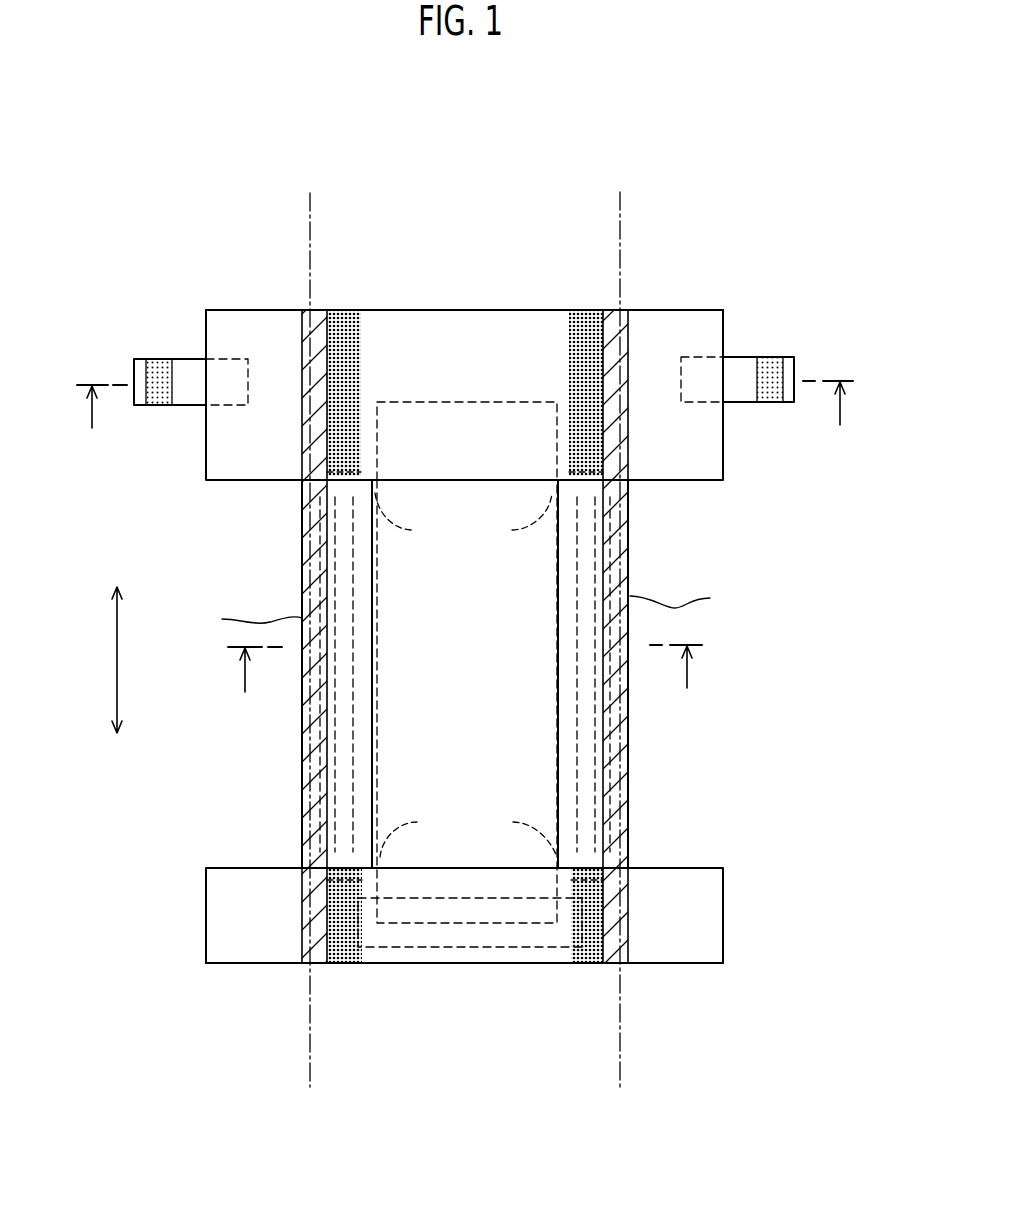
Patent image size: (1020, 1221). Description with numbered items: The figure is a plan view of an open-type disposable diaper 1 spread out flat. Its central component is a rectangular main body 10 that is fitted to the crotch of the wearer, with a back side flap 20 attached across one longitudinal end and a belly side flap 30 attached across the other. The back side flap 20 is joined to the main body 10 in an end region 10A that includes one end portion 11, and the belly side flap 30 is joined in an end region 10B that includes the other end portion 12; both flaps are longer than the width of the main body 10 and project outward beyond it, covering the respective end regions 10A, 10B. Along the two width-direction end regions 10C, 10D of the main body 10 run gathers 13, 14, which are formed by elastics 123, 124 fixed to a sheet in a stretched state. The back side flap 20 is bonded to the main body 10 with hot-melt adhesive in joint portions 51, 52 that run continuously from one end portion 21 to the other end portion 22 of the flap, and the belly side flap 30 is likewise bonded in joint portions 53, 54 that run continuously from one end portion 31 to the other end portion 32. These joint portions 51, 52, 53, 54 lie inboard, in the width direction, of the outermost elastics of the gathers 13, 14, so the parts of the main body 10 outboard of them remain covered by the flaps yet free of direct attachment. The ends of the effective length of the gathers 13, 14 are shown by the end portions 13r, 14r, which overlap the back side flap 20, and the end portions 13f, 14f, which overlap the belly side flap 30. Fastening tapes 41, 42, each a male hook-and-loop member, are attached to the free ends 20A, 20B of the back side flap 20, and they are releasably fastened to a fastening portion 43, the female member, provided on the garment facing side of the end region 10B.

The disposable diaper 1 is at (546, 139).
The main body 10 is at (522, 584).
The end region 10A is at (452, 350).
The end region 10B is at (418, 958).
The end region 10C is at (570, 740).
The end region 10D is at (362, 585).
The end portion 11 is at (400, 310).
The end portion 12 is at (540, 964).
The gather 13 is at (605, 788).
The end portion of effective length 13f is at (517, 830).
The end portion of effective length 13r is at (515, 517).
The gather 14 is at (348, 757).
The end portion of effective length 14f is at (416, 830).
The end portion of effective length 14r is at (412, 517).
The back side flap 20 is at (495, 310).
The free end 20A is at (700, 310).
The free end 20B is at (233, 310).
The end portion 21 is at (541, 310).
The end portion 22 is at (490, 492).
The belly side flap 30 is at (453, 933).
The end portion 31 is at (472, 868).
The end portion 32 is at (498, 964).
The fastening tape 41 is at (738, 372).
The fastening tape 42 is at (185, 372).
The fastening portion 43 is at (372, 947).
The joint portion 51 is at (578, 310).
The joint portion 52 is at (350, 310).
The joint portion 53 is at (592, 945).
The joint portion 54 is at (343, 945).
The elastics 123 is at (612, 498).
The elastics 124 is at (310, 525).